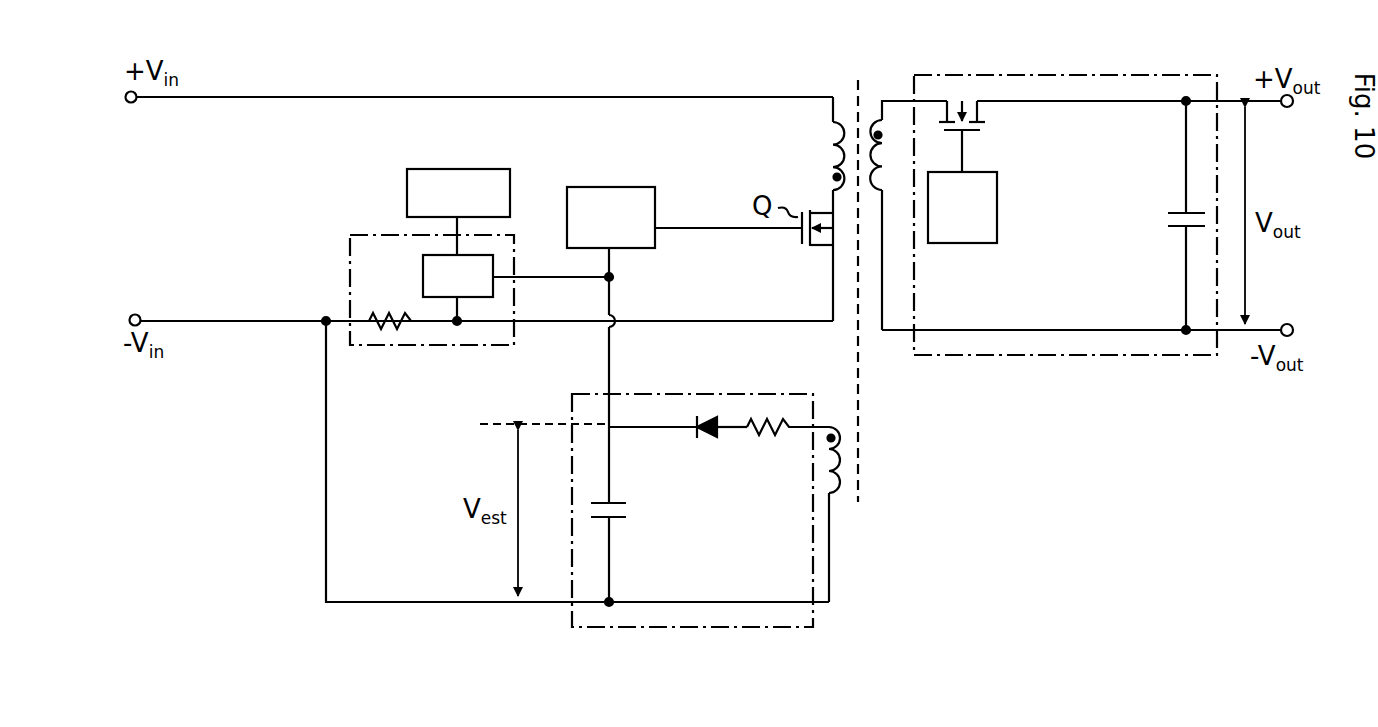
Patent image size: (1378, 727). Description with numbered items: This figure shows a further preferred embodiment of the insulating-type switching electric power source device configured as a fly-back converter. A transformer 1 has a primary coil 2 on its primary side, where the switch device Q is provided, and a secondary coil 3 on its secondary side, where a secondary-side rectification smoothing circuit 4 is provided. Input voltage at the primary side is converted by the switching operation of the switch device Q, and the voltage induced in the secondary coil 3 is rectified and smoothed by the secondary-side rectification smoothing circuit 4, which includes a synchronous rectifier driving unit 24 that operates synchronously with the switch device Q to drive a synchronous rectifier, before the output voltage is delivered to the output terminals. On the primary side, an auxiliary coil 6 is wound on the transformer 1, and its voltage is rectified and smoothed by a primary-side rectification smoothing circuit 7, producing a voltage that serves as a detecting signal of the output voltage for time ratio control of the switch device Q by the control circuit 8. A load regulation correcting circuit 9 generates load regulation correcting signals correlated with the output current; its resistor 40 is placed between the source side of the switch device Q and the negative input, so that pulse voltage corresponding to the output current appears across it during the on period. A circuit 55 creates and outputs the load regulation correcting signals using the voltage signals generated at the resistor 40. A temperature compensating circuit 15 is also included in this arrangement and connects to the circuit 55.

The transformer 1 is at (858, 80).
The primary coil 2 is at (828, 154).
The secondary coil 3 is at (869, 150).
The secondary-side rectification smoothing circuit 4 is at (1081, 186).
The auxiliary coil 6 is at (848, 457).
The primary-side rectification smoothing circuit 7 is at (695, 393).
The control circuit 8 is at (608, 187).
The load regulation correcting circuit 9 is at (478, 259).
The temperature compensating circuit 15 is at (457, 169).
The synchronous rectifier driving unit 24 is at (997, 212).
The resistor 40 is at (379, 313).
The circuit for creating load regulation correcting signals 55 is at (493, 262).